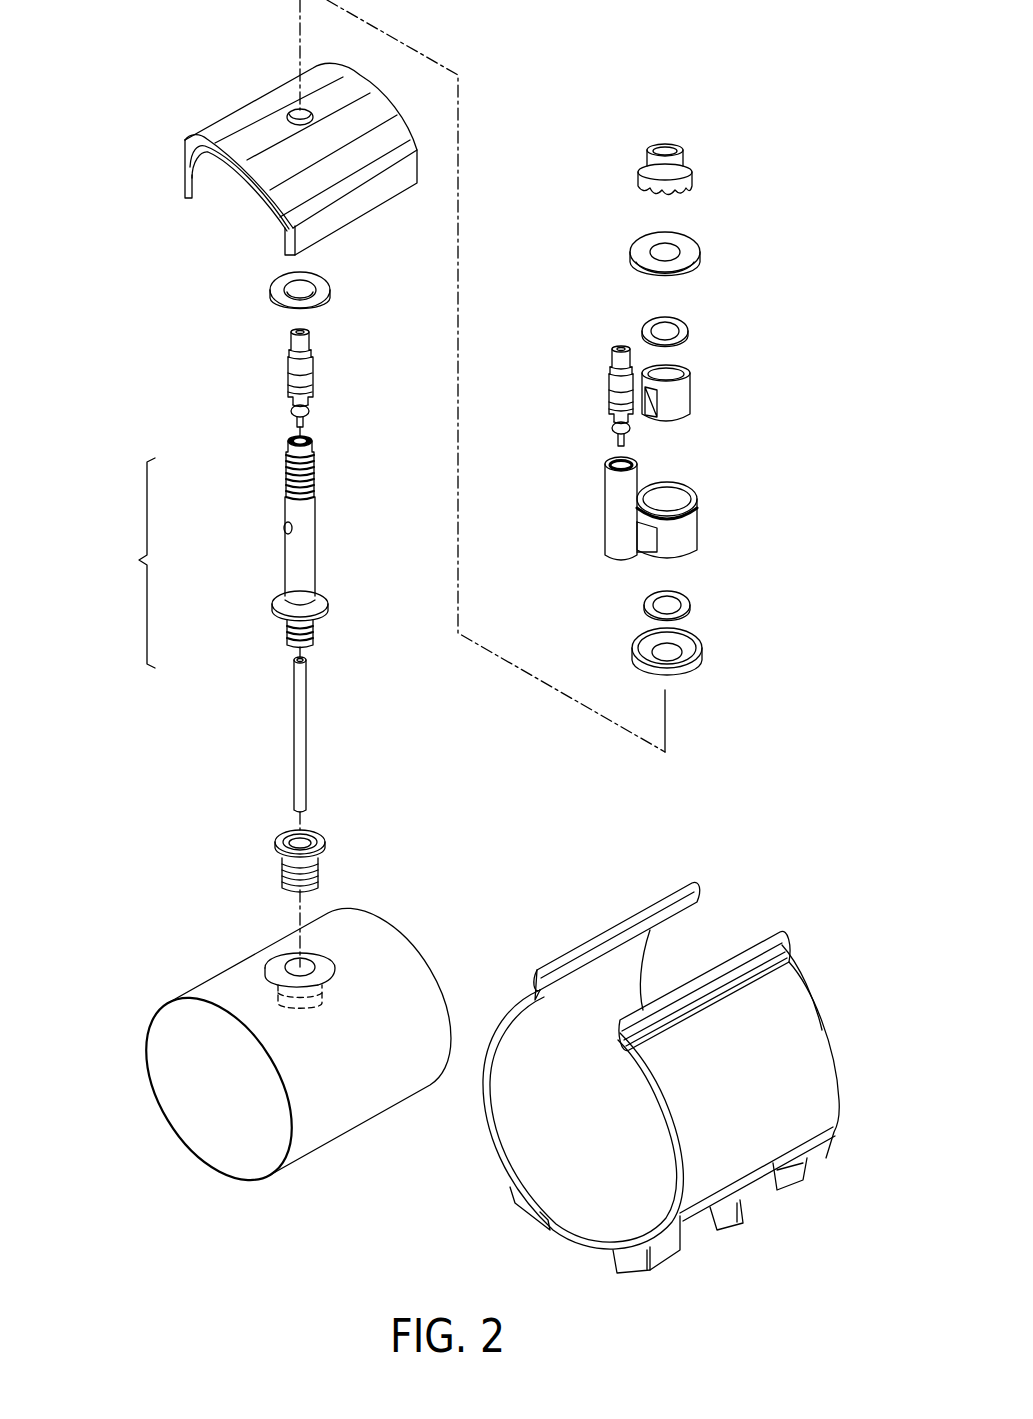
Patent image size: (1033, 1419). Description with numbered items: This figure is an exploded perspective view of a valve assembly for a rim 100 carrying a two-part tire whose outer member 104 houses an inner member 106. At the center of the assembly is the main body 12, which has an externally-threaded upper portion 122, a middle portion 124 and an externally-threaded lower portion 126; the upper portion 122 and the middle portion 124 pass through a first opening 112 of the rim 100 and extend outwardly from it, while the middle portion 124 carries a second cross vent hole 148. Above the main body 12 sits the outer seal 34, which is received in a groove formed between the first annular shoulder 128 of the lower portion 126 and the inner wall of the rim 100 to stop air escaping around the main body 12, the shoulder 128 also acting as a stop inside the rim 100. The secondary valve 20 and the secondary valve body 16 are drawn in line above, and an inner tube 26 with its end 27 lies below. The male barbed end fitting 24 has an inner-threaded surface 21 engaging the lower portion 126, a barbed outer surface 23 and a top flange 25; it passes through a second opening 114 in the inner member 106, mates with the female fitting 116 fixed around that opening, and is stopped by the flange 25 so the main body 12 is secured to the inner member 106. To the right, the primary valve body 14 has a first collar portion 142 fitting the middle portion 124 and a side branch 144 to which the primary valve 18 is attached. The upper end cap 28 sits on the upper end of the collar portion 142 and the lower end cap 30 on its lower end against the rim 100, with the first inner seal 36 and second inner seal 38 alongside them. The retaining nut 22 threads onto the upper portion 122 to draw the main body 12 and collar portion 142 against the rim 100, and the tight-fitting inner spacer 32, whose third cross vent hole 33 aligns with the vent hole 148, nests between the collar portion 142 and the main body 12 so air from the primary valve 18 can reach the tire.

The rim 100 is at (240, 157).
The first opening 112 is at (290, 114).
The outer seal 34 is at (342, 290).
The secondary valve 20 is at (282, 376).
The secondary valve body 16 is at (304, 543).
The externally-threaded upper portion 122 is at (285, 473).
The second cross vent hole 148 is at (285, 528).
The middle portion 124 is at (285, 565).
The first annular shoulder 128 is at (328, 612).
The externally-threaded lower portion 126 is at (285, 637).
The main body 12 is at (127, 563).
The inner tube 26 is at (313, 740).
The tube end 27 is at (292, 810).
The male barbed end fitting 24 is at (310, 838).
The top flange 25 is at (278, 842).
The inner-threaded surface 21 is at (302, 842).
The barbed outer surface 23 is at (282, 867).
The inner member 106 is at (287, 1042).
The female fitting 116 is at (262, 970).
The second opening 114 is at (308, 965).
The outer member 104 is at (507, 1165).
The retaining nut 22 is at (700, 163).
The upper end cap 28 is at (707, 257).
The first inner seal 36 is at (695, 330).
The primary valve 18 is at (602, 388).
The tight-fitting inner spacer 32 is at (716, 410).
The third cross vent hole 33 is at (650, 412).
The primary valve body 14 is at (681, 508).
The side branch 144 is at (622, 512).
The first collar portion 142 is at (677, 538).
The second inner seal 38 is at (693, 603).
The lower end cap 30 is at (707, 658).